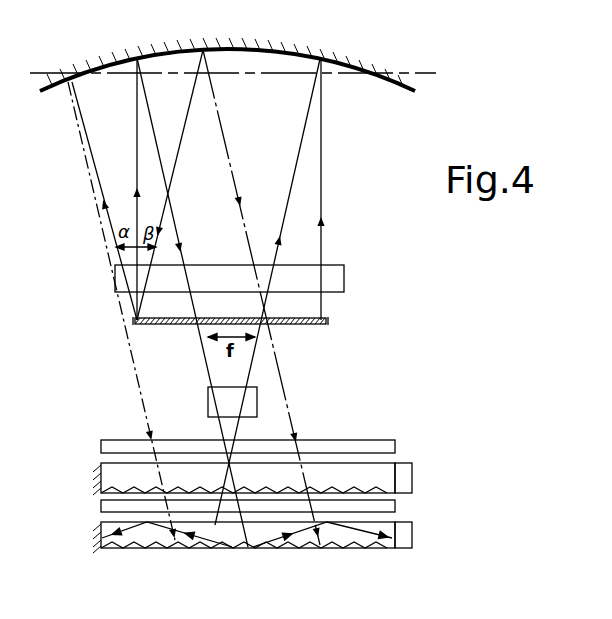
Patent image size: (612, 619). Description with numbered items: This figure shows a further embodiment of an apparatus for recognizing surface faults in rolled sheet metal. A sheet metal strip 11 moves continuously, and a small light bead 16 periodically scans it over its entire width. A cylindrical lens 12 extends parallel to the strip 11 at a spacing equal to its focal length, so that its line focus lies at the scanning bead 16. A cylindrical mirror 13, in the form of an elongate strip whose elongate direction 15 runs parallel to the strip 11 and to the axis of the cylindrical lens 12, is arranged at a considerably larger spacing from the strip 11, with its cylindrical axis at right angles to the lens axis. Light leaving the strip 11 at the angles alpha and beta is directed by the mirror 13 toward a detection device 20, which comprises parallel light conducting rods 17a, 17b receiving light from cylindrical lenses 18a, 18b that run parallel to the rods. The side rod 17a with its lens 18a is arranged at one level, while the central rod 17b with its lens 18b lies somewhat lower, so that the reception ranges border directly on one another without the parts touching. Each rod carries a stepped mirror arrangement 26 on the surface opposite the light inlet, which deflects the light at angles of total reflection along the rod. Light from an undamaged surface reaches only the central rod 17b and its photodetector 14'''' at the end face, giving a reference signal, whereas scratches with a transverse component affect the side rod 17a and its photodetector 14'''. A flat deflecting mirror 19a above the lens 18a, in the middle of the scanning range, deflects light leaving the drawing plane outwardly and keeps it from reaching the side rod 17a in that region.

The sheet metal strip 11 is at (298, 324).
The cylindrical lens 12 is at (312, 266).
The cylindrical mirror 13 is at (398, 82).
The photodetector 14''' is at (438, 470).
The photodetector 14'''' is at (441, 543).
The elongate direction of the cylindrical mirror 15 is at (432, 73).
The light bead 16 is at (135, 320).
The light conducting rod 17a is at (383, 466).
The light conducting rod 17b is at (353, 540).
The cylindrical lens 18a is at (345, 440).
The cylindrical lens 18b is at (395, 503).
The deflecting mirror 19a is at (208, 398).
The detection device 20 is at (454, 478).
The stepped mirror arrangement 26 is at (108, 482).